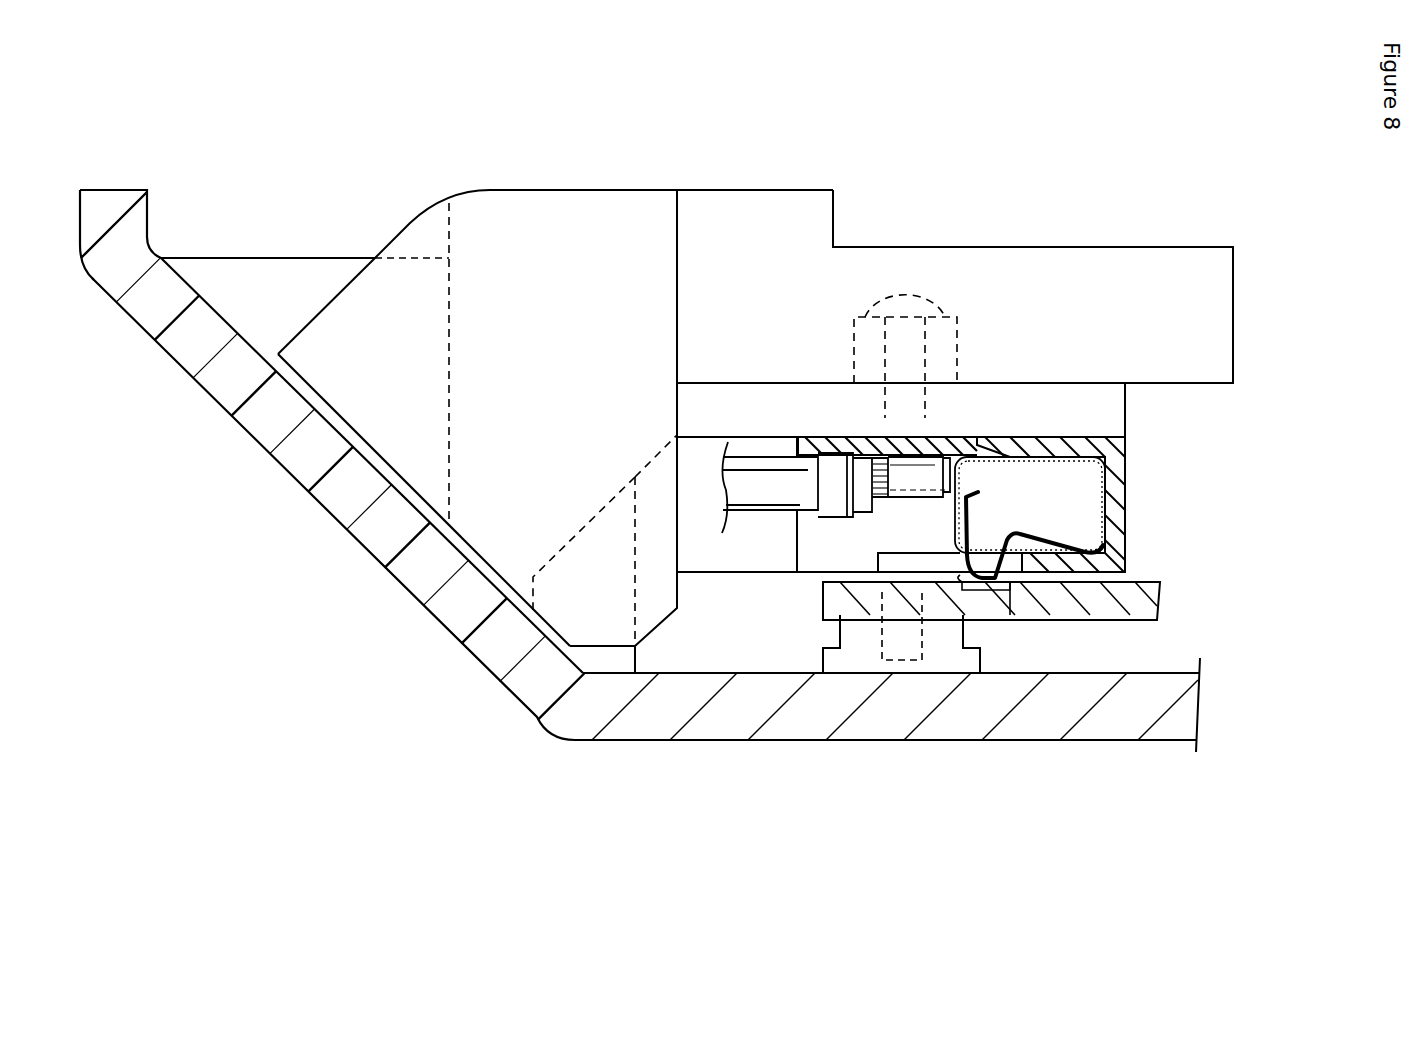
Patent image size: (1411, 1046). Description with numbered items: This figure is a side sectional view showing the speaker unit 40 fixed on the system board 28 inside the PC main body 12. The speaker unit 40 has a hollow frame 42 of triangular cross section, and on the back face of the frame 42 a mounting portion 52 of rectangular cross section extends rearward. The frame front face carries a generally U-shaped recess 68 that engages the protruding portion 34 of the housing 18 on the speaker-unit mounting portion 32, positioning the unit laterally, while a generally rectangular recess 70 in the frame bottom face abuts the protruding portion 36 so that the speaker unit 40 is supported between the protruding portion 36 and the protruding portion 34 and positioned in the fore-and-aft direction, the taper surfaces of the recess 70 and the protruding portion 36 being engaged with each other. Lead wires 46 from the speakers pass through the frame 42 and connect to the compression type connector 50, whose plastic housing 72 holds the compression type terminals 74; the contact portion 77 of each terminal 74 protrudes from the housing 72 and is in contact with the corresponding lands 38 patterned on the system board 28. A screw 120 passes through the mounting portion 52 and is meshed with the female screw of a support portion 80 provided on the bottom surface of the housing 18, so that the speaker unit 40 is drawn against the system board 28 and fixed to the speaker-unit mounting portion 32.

The PC main body 12 is at (1253, 390).
The housing 18 is at (780, 722).
The system board 28 is at (1130, 597).
The speaker-unit mounting portion 32 is at (248, 208).
The protruding portion 34 is at (343, 256).
The protruding portion 36 is at (583, 657).
The lands 38 is at (975, 600).
The speaker unit 40 is at (652, 140).
The frame 42 is at (567, 210).
The lead wires 46 is at (757, 513).
The compression type connector 50 is at (1146, 459).
The mounting portion 52 is at (1204, 263).
The recess 68 is at (447, 228).
The recess 70 is at (650, 451).
The housing 72 is at (1128, 490).
The compression type terminals 74 is at (1033, 535).
The contact portion 77 is at (1012, 591).
The support portions 80 is at (957, 628).
The screws 120 is at (930, 297).